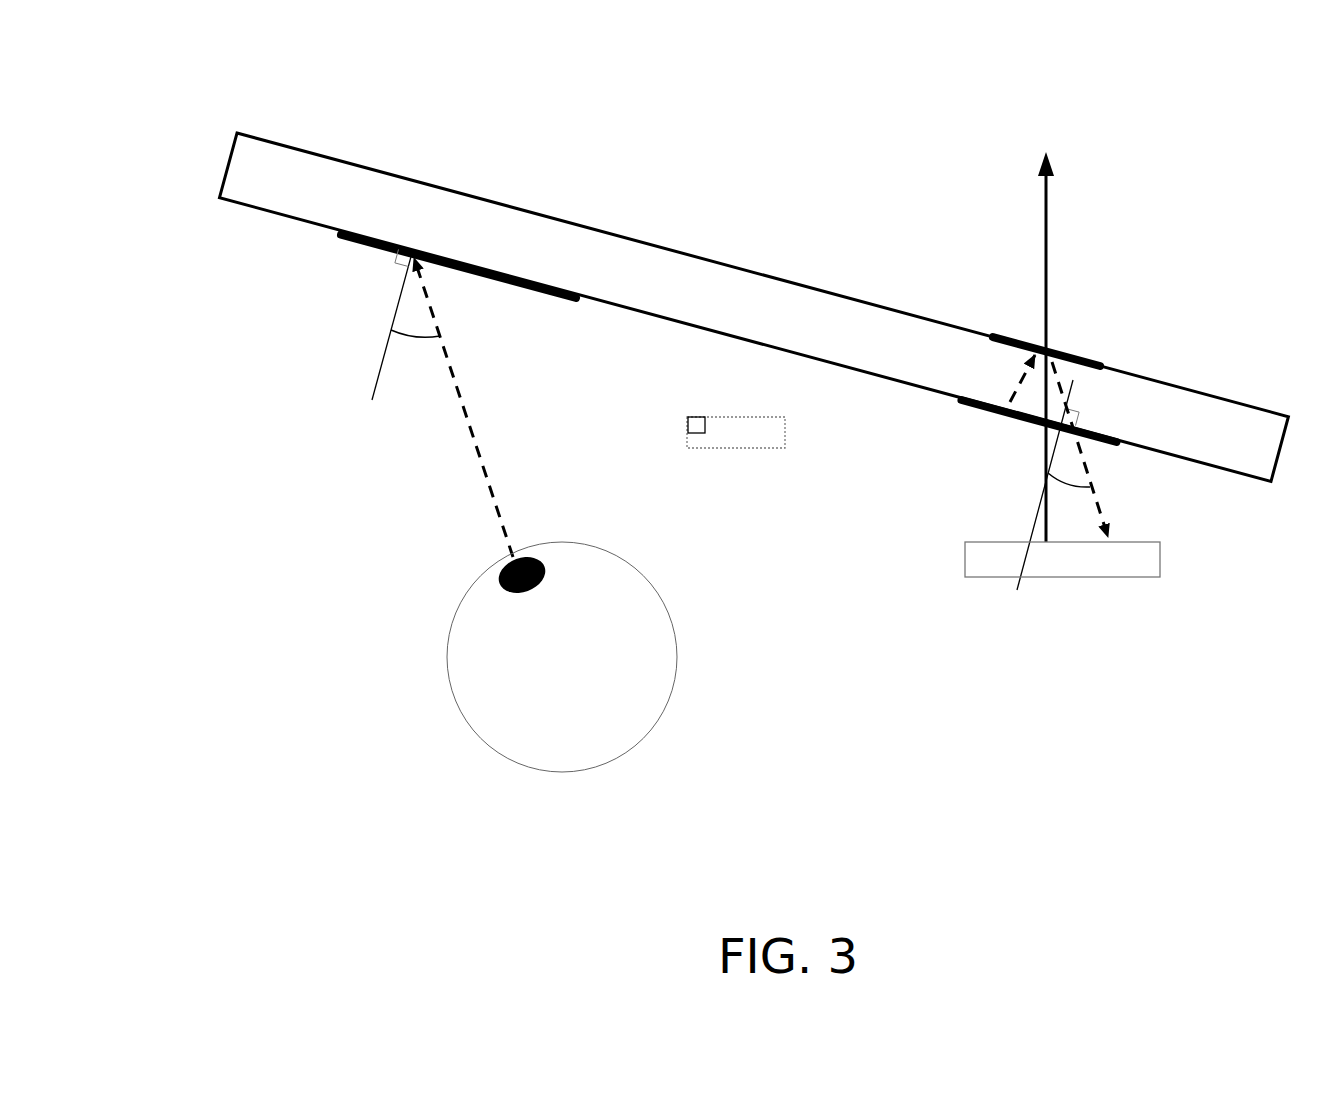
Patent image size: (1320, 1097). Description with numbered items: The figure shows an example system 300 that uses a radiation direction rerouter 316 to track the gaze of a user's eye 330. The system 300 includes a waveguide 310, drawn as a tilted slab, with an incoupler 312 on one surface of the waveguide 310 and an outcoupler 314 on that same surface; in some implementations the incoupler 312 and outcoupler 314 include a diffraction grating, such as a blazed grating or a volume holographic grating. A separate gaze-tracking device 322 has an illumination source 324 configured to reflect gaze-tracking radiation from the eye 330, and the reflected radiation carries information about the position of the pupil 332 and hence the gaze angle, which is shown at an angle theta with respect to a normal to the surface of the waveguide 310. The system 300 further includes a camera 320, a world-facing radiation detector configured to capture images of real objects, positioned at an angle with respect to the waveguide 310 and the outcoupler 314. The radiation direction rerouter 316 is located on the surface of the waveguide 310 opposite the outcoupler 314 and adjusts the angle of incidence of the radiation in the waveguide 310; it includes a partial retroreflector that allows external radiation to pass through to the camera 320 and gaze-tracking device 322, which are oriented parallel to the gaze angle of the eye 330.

The system 300 is at (167, 101).
The waveguide 310 is at (780, 275).
The incoupler 312 is at (516, 285).
The outcoupler 314 is at (977, 406).
The radiation direction rerouter 316 is at (1083, 355).
The camera 320 is at (1080, 580).
The gaze-tracking device 322 is at (778, 450).
The illumination source 324 is at (685, 427).
The eye 330 is at (562, 657).
The pupil 332 is at (543, 557).